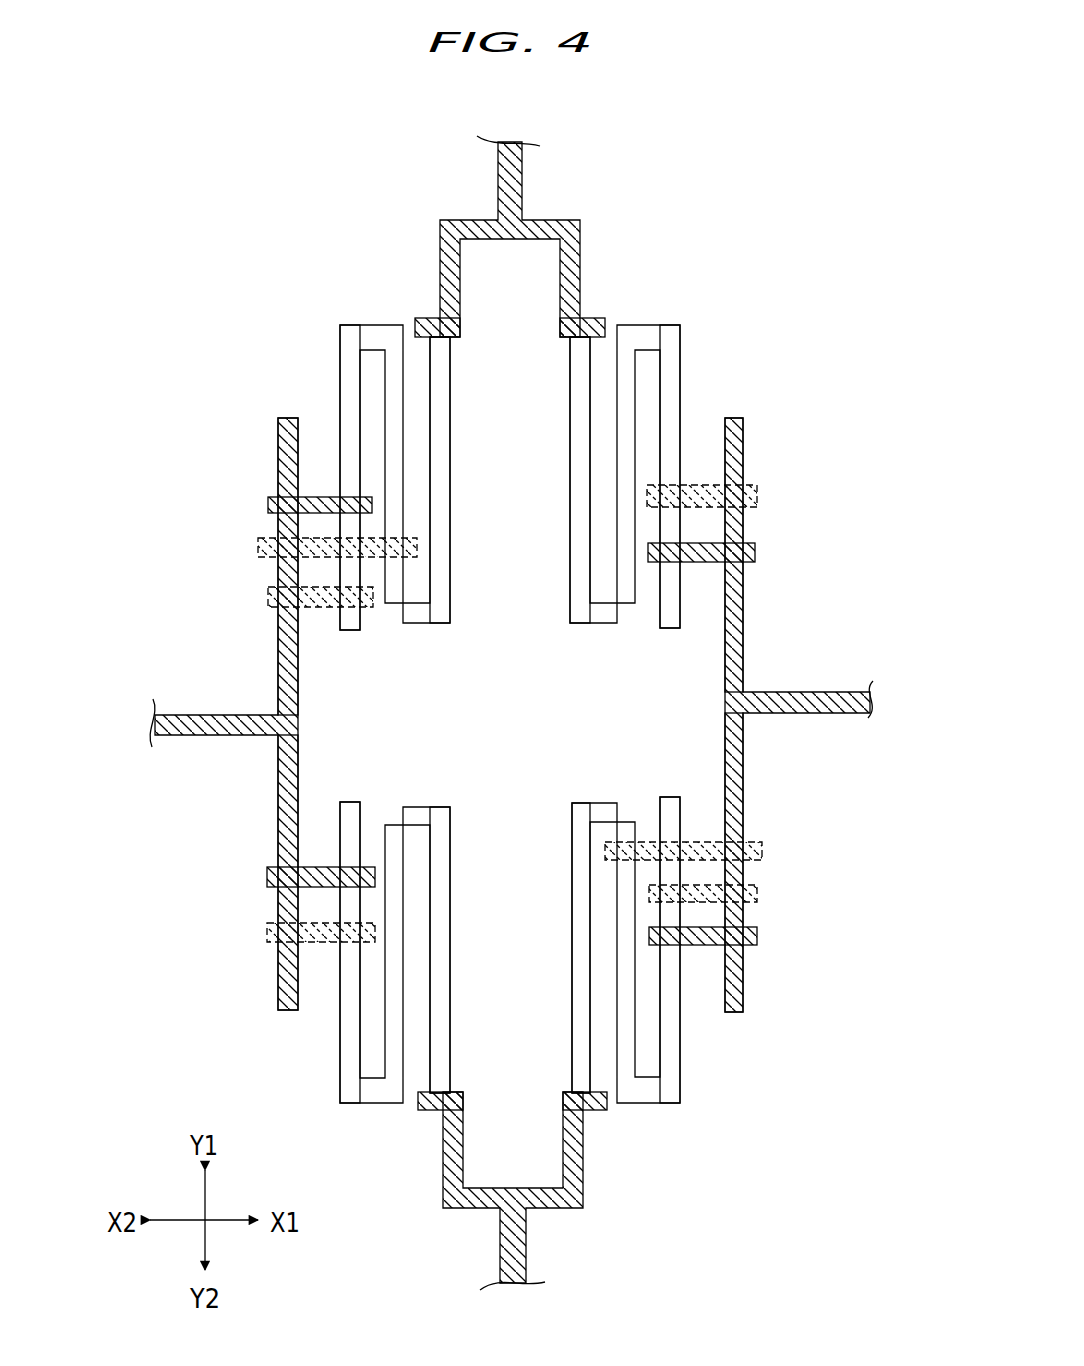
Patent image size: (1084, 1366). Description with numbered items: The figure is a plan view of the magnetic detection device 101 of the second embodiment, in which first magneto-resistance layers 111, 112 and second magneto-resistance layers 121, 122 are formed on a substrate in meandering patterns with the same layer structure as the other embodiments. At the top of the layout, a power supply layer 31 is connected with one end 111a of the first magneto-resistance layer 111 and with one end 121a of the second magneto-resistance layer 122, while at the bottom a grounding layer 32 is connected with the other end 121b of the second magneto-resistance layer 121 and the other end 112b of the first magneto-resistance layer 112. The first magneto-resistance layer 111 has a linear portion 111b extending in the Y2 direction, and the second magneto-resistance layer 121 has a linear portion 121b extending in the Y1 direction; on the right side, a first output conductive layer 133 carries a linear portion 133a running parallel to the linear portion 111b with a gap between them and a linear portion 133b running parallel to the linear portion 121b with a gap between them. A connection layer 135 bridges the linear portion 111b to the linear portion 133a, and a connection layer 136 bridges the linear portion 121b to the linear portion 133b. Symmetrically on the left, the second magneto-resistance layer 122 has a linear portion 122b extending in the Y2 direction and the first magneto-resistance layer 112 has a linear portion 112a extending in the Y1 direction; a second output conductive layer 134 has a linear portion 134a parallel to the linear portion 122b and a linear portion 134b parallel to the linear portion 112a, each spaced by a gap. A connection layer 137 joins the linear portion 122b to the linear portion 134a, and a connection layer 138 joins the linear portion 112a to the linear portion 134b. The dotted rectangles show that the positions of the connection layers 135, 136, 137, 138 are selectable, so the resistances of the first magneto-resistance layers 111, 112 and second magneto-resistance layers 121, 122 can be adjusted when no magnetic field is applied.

The magnetic detection device 101 is at (654, 230).
The power supply layer 31 is at (547, 226).
The grounding layer 32 is at (583, 1195).
The first magneto-resistance layer 111 is at (689, 375).
The one end of first magneto-resistance layer 111a is at (562, 333).
The linear portion of first magneto-resistance layer 111b is at (665, 628).
The first magneto-resistance layer 112 is at (345, 1068).
The linear portion of first magneto-resistance layer 112a is at (355, 802).
The other end of first magneto-resistance layer 112b is at (440, 1112).
The second magneto-resistance layer 121 is at (688, 1076).
The one end of second magneto-resistance layer 121a is at (458, 340).
The linear portion of second magneto-resistance layer 121b is at (587, 1112).
The second magneto-resistance layer 122 is at (333, 363).
The linear portion of second magneto-resistance layer 122b is at (352, 468).
The first output conductive layer 133 is at (807, 692).
The linear portion of first output conductive layer 133a is at (743, 583).
The linear portion of first output conductive layer 133b is at (743, 804).
The second output conductive layer 134 is at (200, 735).
The linear portion of second output conductive layer 134a is at (278, 460).
The linear portion of second output conductive layer 134b is at (278, 986).
The connection layer 135 is at (710, 542).
The connection layer 136 is at (697, 947).
The connection layer 137 is at (300, 498).
The connection layer 138 is at (320, 866).